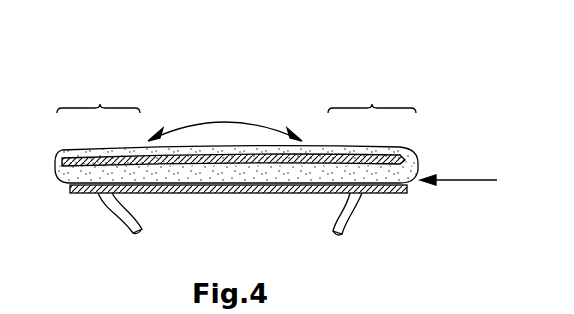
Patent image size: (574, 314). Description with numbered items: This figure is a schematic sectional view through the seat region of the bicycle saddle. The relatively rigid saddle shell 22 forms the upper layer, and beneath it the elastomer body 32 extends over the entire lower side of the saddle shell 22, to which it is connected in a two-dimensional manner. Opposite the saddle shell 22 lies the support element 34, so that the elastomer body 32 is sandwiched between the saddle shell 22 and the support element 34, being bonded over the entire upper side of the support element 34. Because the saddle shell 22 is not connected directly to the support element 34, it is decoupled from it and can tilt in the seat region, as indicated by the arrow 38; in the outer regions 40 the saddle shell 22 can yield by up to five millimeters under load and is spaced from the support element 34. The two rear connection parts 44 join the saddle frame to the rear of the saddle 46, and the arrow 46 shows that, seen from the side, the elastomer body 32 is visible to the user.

The saddle shell 22 is at (325, 147).
The elastomer body 32 is at (340, 184).
The support element 34 is at (231, 196).
The arrow 38 is at (232, 117).
The outer regions 40 is at (236, 94).
The rear connection parts 44 is at (108, 196).
The rear of the saddle 46 is at (476, 180).